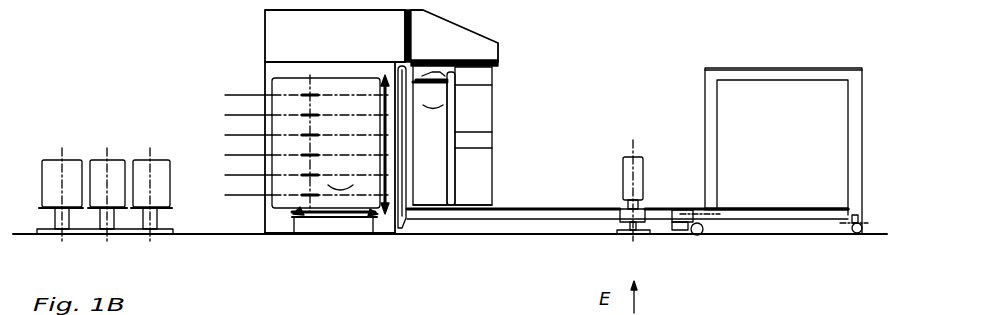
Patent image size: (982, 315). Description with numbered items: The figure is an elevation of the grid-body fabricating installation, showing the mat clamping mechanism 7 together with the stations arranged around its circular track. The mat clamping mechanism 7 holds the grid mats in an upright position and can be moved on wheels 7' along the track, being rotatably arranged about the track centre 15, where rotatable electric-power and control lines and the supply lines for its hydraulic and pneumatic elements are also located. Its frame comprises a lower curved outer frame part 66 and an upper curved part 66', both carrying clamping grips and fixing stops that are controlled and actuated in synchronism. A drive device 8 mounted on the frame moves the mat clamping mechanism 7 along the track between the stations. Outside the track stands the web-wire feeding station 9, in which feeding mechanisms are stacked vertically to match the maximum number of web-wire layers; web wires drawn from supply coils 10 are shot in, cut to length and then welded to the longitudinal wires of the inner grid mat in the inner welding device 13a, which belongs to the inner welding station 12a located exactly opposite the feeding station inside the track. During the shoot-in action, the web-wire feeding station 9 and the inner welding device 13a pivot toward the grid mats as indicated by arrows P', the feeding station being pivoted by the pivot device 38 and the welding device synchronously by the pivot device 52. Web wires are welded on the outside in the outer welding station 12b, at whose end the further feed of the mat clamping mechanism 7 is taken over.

The supply coils 10 is at (67, 162).
The web-wire feeding station 9 is at (288, 100).
The pivot device 38 is at (293, 214).
The pivoting movement arrows P' is at (427, 193).
The pivot device 52 is at (448, 76).
The inner welding device 13a is at (433, 192).
The inner welding station 12a is at (480, 75).
The outer welding station 12b is at (452, 260).
The track centre 15 is at (640, 168).
The drive device 8 is at (707, 231).
The mat clamping mechanism 7 is at (783, 129).
The upper curved part 66' is at (783, 42).
The outer frame part 66 is at (776, 247).
The wheels 7' is at (854, 248).